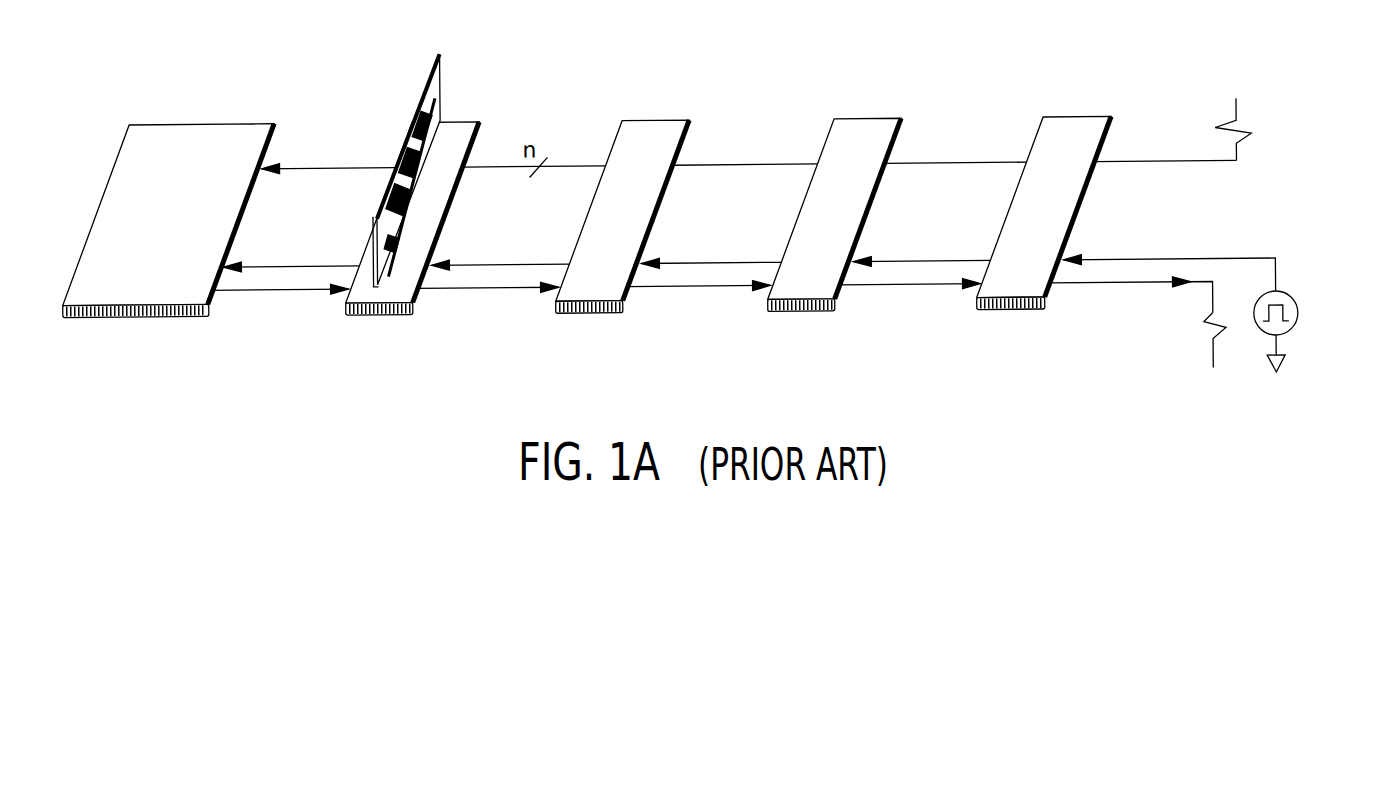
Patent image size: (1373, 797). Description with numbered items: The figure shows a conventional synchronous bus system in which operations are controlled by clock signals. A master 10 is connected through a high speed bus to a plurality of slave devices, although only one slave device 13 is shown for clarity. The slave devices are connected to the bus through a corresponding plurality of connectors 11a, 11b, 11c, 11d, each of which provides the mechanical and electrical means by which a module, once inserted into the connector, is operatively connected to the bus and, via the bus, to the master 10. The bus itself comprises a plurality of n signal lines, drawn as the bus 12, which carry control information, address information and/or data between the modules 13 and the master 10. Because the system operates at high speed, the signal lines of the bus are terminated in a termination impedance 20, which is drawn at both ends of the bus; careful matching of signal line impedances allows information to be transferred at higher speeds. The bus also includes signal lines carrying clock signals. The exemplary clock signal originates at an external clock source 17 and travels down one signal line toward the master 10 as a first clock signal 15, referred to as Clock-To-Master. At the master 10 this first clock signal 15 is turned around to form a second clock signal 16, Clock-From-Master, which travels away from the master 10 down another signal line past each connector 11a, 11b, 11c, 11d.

The master 10 is at (157, 288).
The connector 11a is at (383, 313).
The connector 11b is at (593, 313).
The connector 11c is at (800, 314).
The connector 11d is at (1013, 314).
The data bus 12 is at (324, 165).
The slave device 13 is at (438, 82).
The first clock signal 15 is at (1128, 262).
The second clock signal 16 is at (1112, 287).
The external clock source 17 is at (1298, 321).
The termination impedance 20 is at (1247, 131).